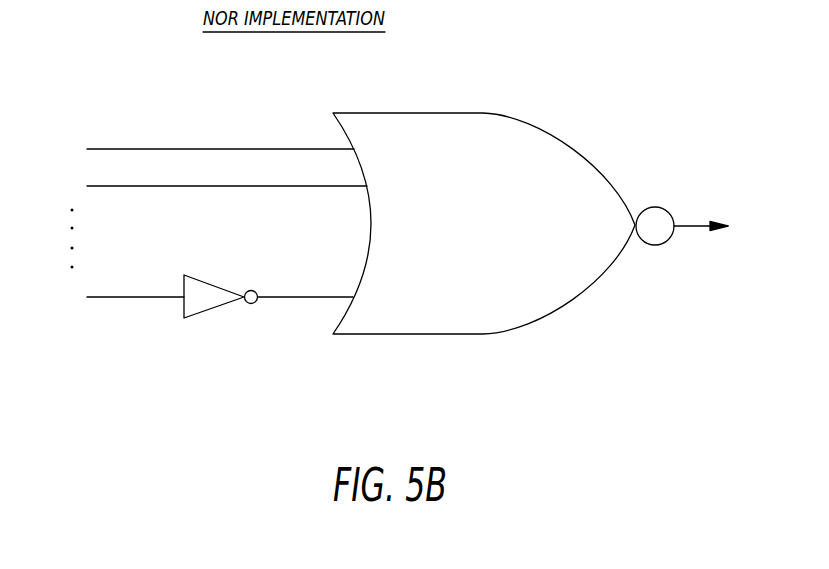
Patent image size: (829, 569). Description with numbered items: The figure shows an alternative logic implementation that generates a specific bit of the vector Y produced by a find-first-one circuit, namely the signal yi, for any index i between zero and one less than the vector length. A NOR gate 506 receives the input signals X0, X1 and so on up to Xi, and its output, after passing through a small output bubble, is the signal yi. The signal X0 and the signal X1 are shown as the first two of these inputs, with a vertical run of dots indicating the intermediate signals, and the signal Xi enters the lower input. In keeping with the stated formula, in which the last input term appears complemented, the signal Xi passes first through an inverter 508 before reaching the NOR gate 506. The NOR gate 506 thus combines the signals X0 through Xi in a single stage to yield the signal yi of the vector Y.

The NOR gate 506 is at (607, 181).
The inverter 508 is at (218, 306).
The signal x0 X0 is at (204, 148).
The signal x1 X1 is at (211, 185).
The signal xi Xi is at (119, 297).
The signal yi is at (710, 203).